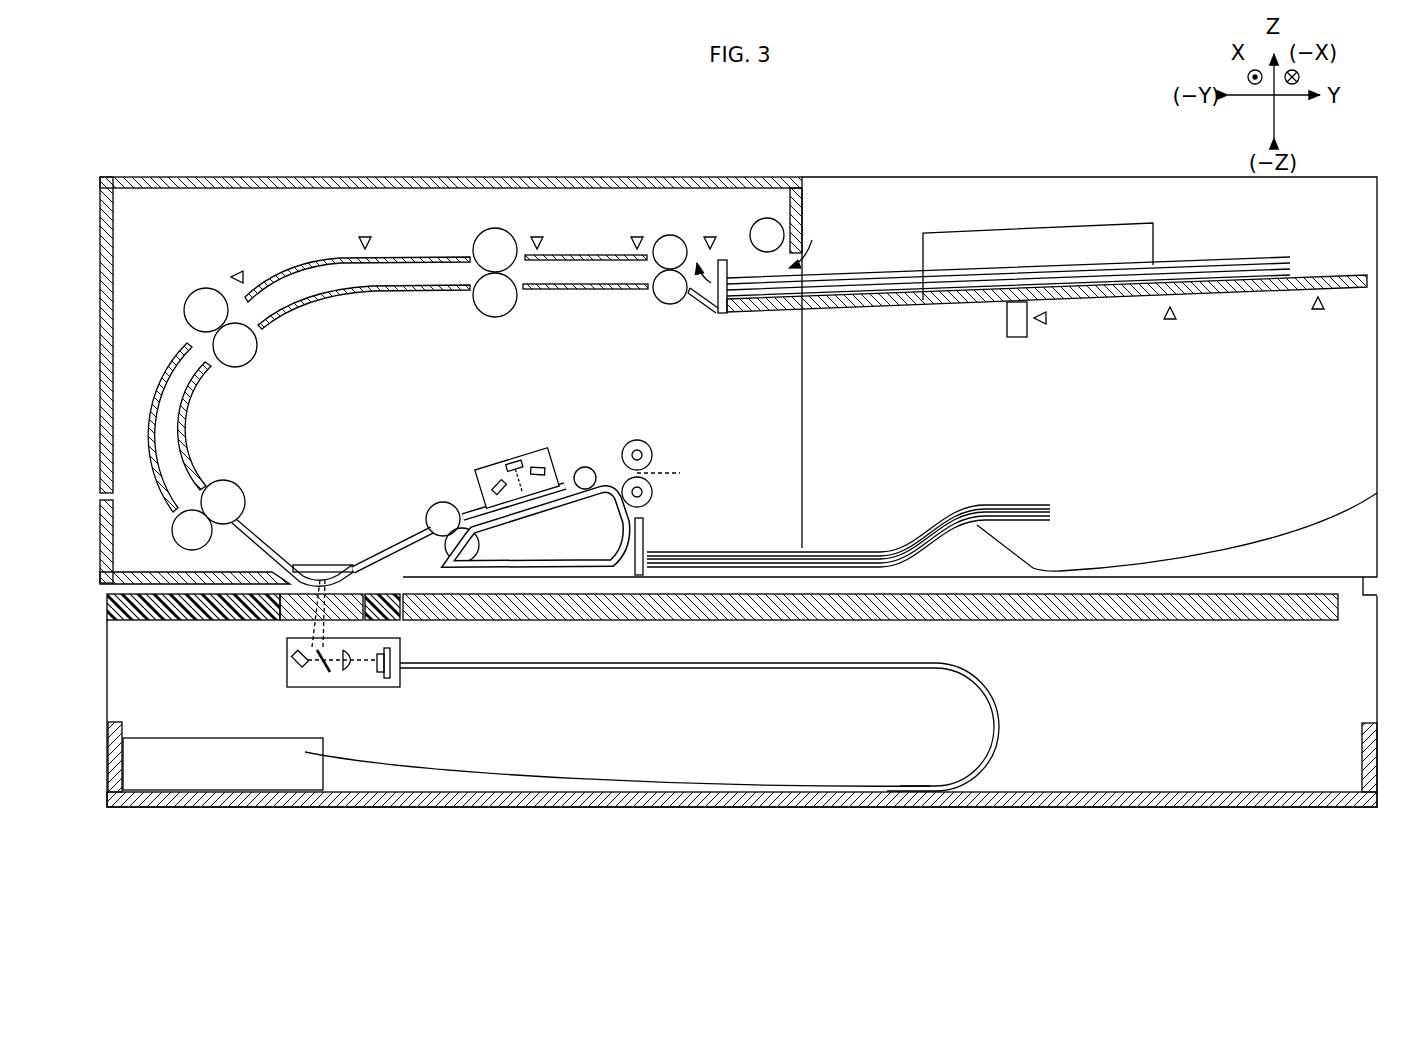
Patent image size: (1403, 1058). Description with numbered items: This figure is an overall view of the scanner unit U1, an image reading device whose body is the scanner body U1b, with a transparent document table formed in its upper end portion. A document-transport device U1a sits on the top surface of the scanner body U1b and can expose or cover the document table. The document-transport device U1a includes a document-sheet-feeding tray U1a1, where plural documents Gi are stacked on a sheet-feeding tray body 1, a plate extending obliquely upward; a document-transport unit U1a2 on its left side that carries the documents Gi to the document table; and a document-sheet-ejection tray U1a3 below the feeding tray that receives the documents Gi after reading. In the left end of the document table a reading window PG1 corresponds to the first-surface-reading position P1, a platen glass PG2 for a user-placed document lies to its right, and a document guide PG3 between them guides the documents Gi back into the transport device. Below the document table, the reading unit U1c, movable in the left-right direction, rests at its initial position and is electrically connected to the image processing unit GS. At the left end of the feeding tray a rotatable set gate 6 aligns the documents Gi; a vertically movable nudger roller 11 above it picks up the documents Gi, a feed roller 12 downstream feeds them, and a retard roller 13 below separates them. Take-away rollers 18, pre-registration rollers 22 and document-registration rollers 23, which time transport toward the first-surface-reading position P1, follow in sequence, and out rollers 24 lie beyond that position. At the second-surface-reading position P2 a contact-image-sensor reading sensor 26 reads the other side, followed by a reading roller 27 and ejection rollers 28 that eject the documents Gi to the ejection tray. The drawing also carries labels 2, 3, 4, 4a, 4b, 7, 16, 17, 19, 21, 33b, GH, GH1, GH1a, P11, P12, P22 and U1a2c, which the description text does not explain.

The sheet-feeding tray body 1 is at (928, 314).
The medium supply tray cover 2 is at (1018, 242).
The medium detection member 3 is at (1047, 318).
The medium supply section 4 is at (1338, 362).
The first medium supply portion 4a is at (1170, 320).
The second medium supply portion 4b is at (1318, 310).
The set gate 6 is at (729, 270).
The pickup position 7 is at (710, 237).
The nudger roller 11 is at (768, 222).
The feed roller 12 is at (668, 248).
The retard roller 13 is at (674, 296).
The first transport position 16 is at (636, 237).
The second transport position 17 is at (537, 237).
The take-away rollers 18 is at (485, 236).
The third transport position 19 is at (365, 237).
The reversing position 21 is at (232, 276).
The pre-registration rollers 22 is at (205, 294).
The document-registration rollers 23 is at (236, 498).
The out rollers 24 is at (439, 506).
The reading sensor 26 is at (530, 450).
The reading roller 27 is at (582, 466).
The ejection rollers 28 is at (660, 492).
The tray bottom plate 33b is at (1342, 274).
The documents Gi is at (1230, 256).
The medium guide GH is at (318, 492).
The curved guide GH1 is at (188, 396).
The outer curved guide GH1a is at (178, 352).
The image processing unit GS is at (306, 752).
The first-surface-reading position P1 is at (323, 574).
The second-surface-reading position P2 is at (530, 492).
The supply path P11 is at (794, 255).
The reverse path P12 is at (178, 489).
The discharge path P22 is at (604, 480).
The reading window PG1 is at (356, 564).
The platen glass PG2 is at (684, 622).
The document guide PG3 is at (406, 621).
The scanner unit U1 is at (297, 152).
The document-transport device U1a is at (453, 128).
The document-sheet-feeding tray U1a1 is at (1103, 350).
The document-transport unit U1a2 is at (527, 163).
The transport path portion U1a2c is at (581, 326).
The document-sheet-ejection tray U1a3 is at (1190, 492).
The scanner body U1b is at (383, 822).
The reading unit U1c is at (272, 666).